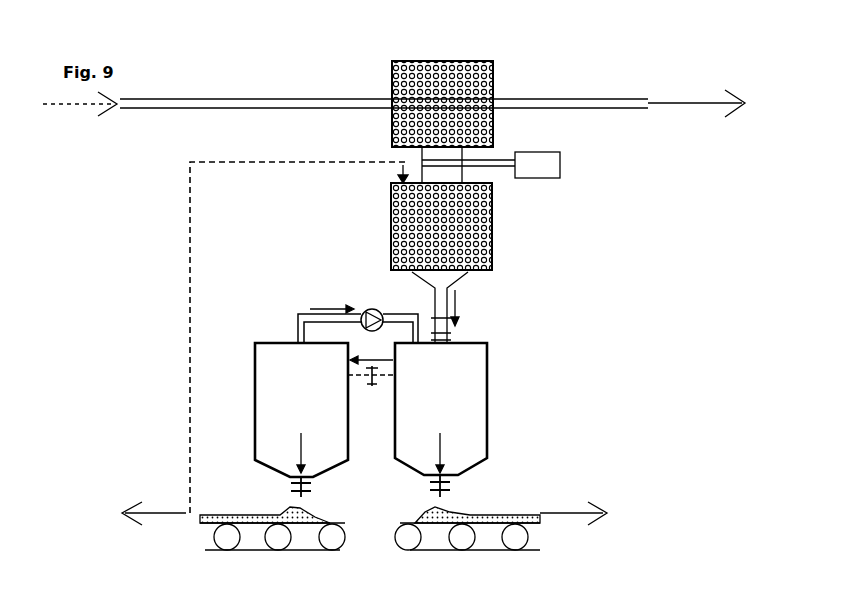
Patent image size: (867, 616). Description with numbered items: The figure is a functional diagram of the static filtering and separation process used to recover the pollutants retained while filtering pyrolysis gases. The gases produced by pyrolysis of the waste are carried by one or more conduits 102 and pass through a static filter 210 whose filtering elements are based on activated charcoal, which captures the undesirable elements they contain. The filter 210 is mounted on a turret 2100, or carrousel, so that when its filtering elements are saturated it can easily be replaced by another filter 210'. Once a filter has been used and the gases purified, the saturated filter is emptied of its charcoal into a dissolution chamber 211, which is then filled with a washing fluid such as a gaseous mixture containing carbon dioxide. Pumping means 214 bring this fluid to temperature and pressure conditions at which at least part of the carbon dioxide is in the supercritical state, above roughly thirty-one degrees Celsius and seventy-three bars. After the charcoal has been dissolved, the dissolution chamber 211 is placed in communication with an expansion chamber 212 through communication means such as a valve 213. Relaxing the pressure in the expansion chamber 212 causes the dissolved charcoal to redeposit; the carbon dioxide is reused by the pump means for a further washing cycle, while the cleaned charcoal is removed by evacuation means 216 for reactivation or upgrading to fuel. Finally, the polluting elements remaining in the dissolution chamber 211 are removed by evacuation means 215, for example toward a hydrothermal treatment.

The conduit 102 is at (302, 103).
The static filter 210 is at (506, 80).
The turret 2100 is at (467, 158).
The replacement filter 210' is at (507, 263).
The dissolution chamber 211 is at (473, 370).
The expansion chamber 212 is at (267, 357).
The valve 213 is at (378, 380).
The pumping means 214 is at (363, 308).
The evacuation means 215 is at (440, 537).
The evacuation means 216 is at (285, 535).